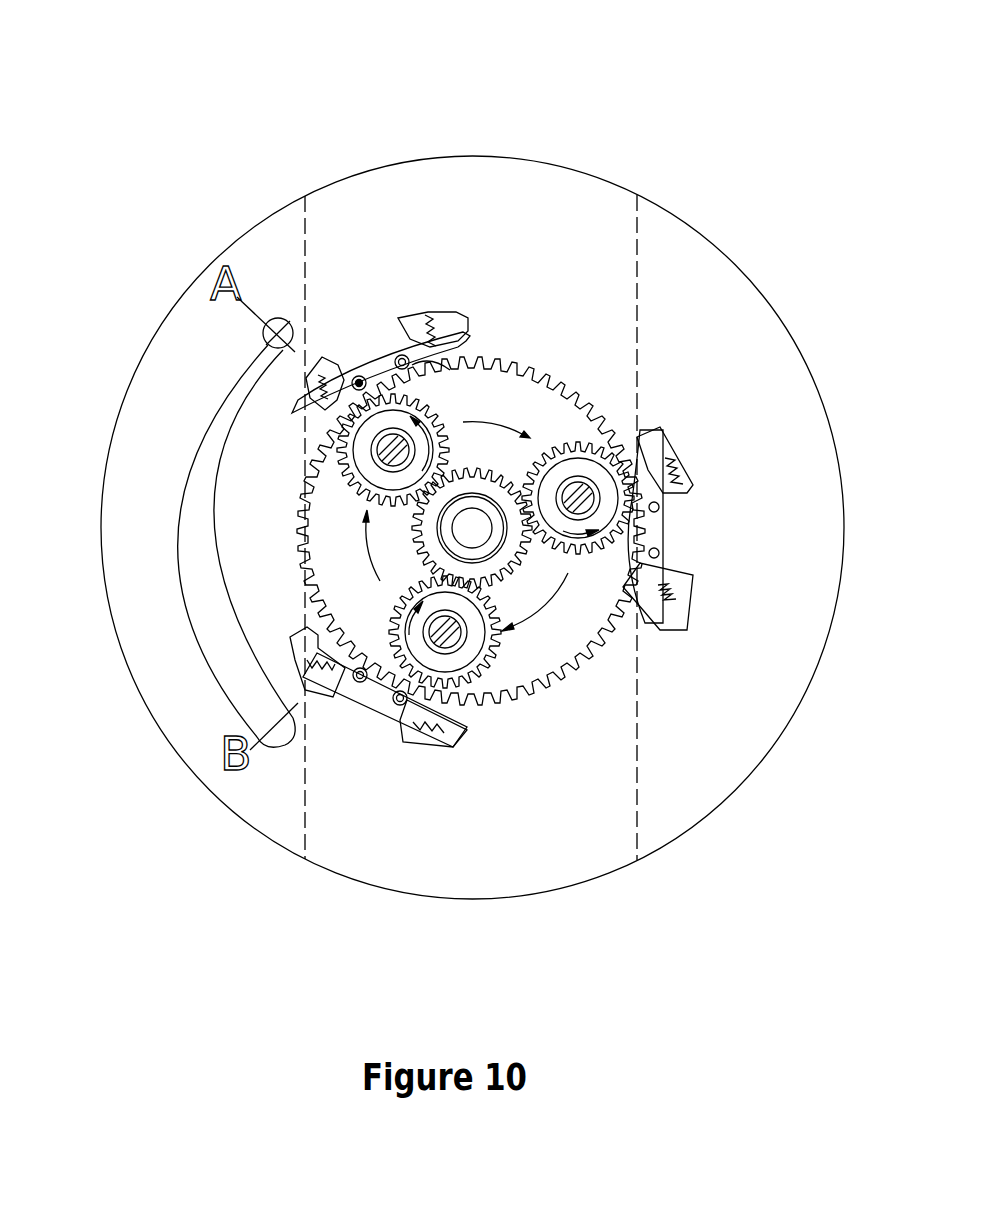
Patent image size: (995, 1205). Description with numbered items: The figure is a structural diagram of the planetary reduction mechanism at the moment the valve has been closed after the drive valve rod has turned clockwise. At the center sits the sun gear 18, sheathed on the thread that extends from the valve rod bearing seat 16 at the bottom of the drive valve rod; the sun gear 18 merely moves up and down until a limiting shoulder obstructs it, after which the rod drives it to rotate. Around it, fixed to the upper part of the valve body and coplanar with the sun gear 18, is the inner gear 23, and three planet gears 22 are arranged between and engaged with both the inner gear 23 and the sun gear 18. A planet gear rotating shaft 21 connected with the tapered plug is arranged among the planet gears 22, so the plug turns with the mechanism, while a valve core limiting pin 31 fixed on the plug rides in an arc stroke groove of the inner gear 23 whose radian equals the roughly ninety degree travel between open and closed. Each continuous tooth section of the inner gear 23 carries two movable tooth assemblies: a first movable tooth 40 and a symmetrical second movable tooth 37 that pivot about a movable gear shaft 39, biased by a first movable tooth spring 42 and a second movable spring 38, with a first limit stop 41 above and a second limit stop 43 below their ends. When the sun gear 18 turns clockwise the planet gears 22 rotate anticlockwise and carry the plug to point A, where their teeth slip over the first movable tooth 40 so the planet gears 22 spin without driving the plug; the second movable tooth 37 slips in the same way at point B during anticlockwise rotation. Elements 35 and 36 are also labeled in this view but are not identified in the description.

The valve rod bearing seat 16 is at (472, 528).
The sun gear 18 is at (410, 574).
The planet gear rotating shaft 21 is at (393, 450).
The planet gears 22 is at (380, 423).
The inner gear 23 is at (603, 633).
The valve core limiting pin 31 is at (272, 340).
The pawl 35 is at (423, 708).
The pawl carrier arm 36 is at (347, 663).
The second movable tooth 37 is at (342, 635).
The second movable spring 38 is at (307, 663).
The movable gear shaft 39 is at (337, 423).
The first movable tooth 40 is at (359, 383).
The first limit stop 41 is at (315, 423).
The first movable tooth spring 42 is at (315, 382).
The second limit stop 43 is at (292, 412).